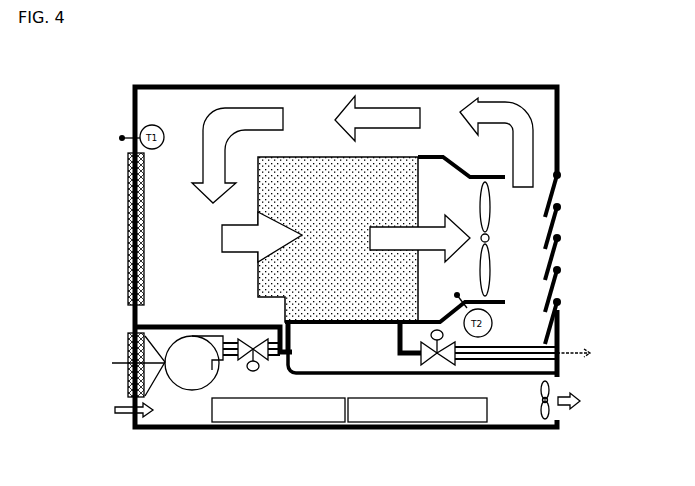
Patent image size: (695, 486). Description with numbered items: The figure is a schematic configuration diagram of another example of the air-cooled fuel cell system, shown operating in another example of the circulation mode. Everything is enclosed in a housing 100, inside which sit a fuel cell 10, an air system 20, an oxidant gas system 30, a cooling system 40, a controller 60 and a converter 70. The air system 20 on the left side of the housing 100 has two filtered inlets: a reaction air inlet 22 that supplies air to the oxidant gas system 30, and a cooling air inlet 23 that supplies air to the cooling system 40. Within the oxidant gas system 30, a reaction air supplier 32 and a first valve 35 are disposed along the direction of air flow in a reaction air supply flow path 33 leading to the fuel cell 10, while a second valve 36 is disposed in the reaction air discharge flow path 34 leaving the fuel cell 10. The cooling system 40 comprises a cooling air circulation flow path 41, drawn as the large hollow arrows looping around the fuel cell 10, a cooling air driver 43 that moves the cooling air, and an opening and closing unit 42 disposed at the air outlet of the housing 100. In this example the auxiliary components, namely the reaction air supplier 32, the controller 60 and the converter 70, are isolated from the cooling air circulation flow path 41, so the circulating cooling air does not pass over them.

The housing 100 is at (490, 87).
The fuel cell 10 is at (370, 151).
The air system 20 is at (57, 206).
The cooling system 40 is at (213, 267).
The reaction air inlet 22 is at (130, 372).
The cooling air inlet 23 is at (128, 235).
The oxidant gas system 30 is at (422, 351).
The reaction air supplier 32 is at (175, 390).
The reaction air supply flow path 33 is at (292, 337).
The reaction air discharge flow path 34 is at (382, 340).
The first valve 35 is at (252, 372).
The second valve 36 is at (452, 368).
The cooling air circulation flow path 41 is at (208, 117).
The opening and closing unit 42 is at (562, 236).
The cooling air driver 43 is at (492, 187).
The controller 60 is at (417, 410).
The converter 70 is at (278, 410).